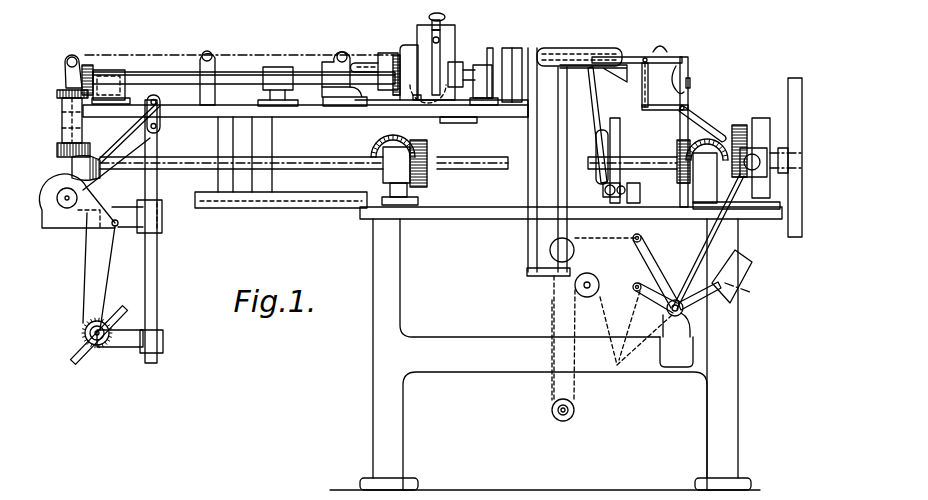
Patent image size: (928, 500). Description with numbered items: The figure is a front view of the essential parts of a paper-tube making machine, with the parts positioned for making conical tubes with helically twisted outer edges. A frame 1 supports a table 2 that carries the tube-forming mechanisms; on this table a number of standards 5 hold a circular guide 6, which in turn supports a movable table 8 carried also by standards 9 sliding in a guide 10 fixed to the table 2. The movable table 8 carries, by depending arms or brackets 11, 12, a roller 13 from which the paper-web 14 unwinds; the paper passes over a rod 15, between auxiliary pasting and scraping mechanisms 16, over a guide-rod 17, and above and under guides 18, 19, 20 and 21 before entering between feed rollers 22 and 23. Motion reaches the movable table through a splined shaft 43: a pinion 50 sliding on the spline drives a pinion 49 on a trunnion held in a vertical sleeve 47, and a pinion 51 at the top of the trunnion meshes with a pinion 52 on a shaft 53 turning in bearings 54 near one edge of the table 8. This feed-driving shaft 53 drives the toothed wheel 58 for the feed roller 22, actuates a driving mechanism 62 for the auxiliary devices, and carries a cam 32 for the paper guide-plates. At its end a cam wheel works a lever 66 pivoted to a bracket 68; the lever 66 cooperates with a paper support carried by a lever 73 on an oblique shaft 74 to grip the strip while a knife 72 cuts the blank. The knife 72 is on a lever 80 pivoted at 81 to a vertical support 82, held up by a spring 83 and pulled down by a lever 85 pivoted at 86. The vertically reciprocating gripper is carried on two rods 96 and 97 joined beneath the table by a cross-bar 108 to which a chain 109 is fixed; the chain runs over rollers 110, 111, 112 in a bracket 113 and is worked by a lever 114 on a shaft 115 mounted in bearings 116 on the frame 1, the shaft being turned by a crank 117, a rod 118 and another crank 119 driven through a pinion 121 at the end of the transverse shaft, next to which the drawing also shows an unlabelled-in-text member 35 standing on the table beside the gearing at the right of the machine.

The frame 1 is at (740, 394).
The table 2 is at (747, 219).
The standards 5 is at (370, 134).
The guide 6 is at (511, 120).
The table 8 is at (338, 117).
The standards 9 is at (273, 137).
The guide 10 is at (258, 208).
The depending arm or bracket 11 is at (158, 288).
The depending arm or bracket 12 is at (127, 350).
The roller 13 is at (98, 352).
The paper-web 14 is at (101, 277).
The rod 15 is at (112, 226).
The auxiliary pasting and scraping mechanisms 16 is at (45, 213).
The guide-rod 17 is at (65, 60).
The guide 18 is at (214, 56).
The guide 19 is at (392, 57).
The guide 20 is at (388, 53).
The guide 21 is at (405, 45).
The feed roller 22 is at (465, 60).
The feed roller 23 is at (441, 33).
The cam 32 is at (342, 52).
The standard 35 is at (765, 118).
The shaft 43 is at (320, 157).
The vertical sleeve 47 is at (62, 122).
The pinion 49 is at (57, 150).
The pinion 50 is at (121, 146).
The pinion 51 is at (57, 93).
The pinion 52 is at (90, 65).
The shaft 53 is at (243, 75).
The bearings 54 is at (282, 65).
The toothed wheel 58 is at (117, 70).
The driving mechanism 62 is at (162, 105).
The lever 66 is at (523, 48).
The bracket 68 is at (470, 123).
The knife 72 is at (575, 47).
The lever 73 is at (595, 102).
The shaft 74 is at (604, 190).
The lever 80 is at (650, 56).
The pivot 81 is at (688, 57).
The vertical support 82 is at (690, 84).
The spring 83 is at (688, 72).
The lever 85 is at (650, 110).
The pivot 86 is at (692, 110).
The vertical rod 96 is at (480, 174).
The vertical rod 97 is at (547, 160).
The cross-bar 108 is at (535, 276).
The chain 109 is at (553, 314).
The roller 110 is at (575, 411).
The roller 111 is at (575, 252).
The roller 112 is at (599, 285).
The bracket 113 is at (583, 230).
The lever 114 is at (643, 238).
The shaft 115 is at (678, 300).
The bearings 116 is at (694, 350).
The crank 117 is at (655, 302).
The rod 118 is at (708, 247).
The crank 119 is at (732, 252).
The pinion 121 is at (739, 125).